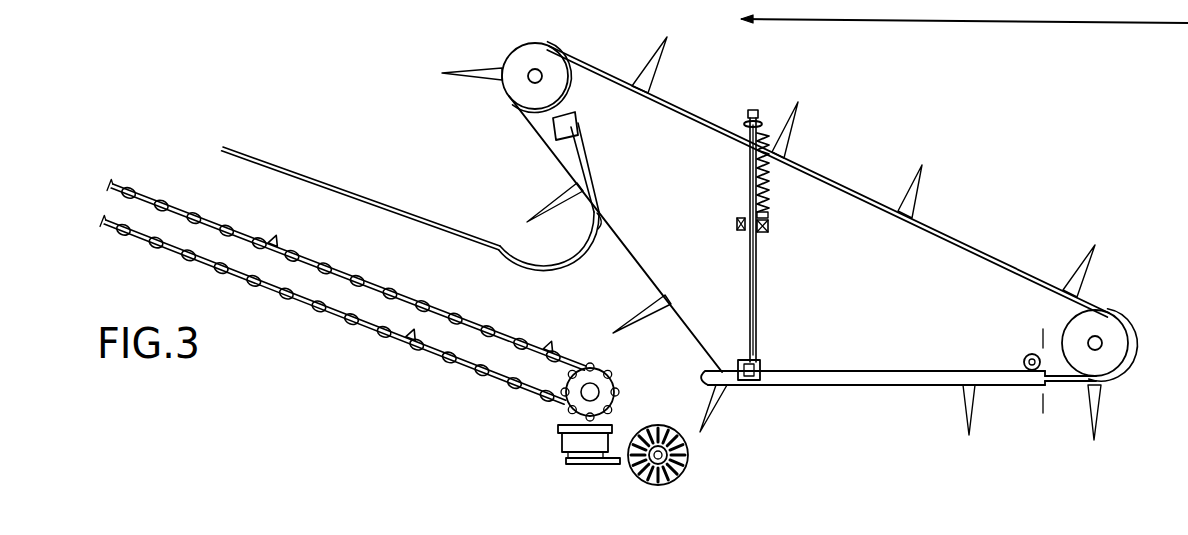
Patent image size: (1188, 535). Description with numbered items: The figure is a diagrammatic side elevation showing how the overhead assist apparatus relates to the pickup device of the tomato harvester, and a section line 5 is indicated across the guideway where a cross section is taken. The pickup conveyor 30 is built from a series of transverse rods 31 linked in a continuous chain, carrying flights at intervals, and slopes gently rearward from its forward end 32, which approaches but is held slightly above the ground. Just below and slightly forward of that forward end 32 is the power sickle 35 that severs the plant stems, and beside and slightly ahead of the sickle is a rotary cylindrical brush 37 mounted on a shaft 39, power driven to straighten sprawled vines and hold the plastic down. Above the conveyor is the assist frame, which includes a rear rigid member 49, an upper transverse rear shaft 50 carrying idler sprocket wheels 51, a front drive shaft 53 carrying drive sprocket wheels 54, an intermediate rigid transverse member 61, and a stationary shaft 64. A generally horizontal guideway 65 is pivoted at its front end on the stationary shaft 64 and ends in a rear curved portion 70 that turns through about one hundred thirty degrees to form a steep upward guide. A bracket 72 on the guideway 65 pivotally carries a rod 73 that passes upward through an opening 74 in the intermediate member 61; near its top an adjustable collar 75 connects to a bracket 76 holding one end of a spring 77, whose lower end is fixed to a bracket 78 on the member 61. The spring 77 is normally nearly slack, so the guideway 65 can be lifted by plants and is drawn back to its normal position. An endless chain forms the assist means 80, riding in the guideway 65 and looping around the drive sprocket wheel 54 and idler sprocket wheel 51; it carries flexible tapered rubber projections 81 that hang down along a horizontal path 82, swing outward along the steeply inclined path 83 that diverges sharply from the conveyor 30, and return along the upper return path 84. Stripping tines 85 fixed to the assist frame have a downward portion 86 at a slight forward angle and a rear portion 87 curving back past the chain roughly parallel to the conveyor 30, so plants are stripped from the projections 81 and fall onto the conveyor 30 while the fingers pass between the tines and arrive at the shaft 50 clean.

The section line 5- 5 is at (1038, 337).
The pickup conveyor 30 is at (348, 347).
The rods 31 is at (385, 287).
The forward end 32 is at (585, 368).
The power sickle 35 is at (598, 464).
The rotary cylindrical brush 37 is at (687, 461).
The shaft 39 is at (660, 464).
The rear rigid member 49 is at (545, 128).
The upper transverse rear shaft 50 is at (523, 46).
The idler sprocket wheels 51 is at (535, 67).
The drive shaft 53 is at (1102, 342).
The drive sprocket wheels 54 is at (1116, 356).
The intermediate rigid transverse member 61 is at (770, 231).
The stationary shaft 64 is at (1023, 358).
The guideway 65 is at (918, 368).
The rear curved portion 70 is at (727, 366).
The bracket 72 is at (753, 360).
The rod 73 is at (748, 215).
The opening 74 is at (742, 223).
The adjustable collar 75 is at (748, 129).
The bracket 76 is at (756, 122).
The spring 77 is at (769, 191).
The bracket 78 is at (769, 216).
The assist means 80 is at (664, 97).
The projections 81 is at (665, 43).
The horizontal path 82 is at (1068, 383).
The steeply inclined path 83 is at (628, 250).
The upper return path 84 is at (689, 118).
The stripping tines 85 is at (500, 233).
The downward portion 86 is at (606, 213).
The rear portion 87 is at (318, 182).